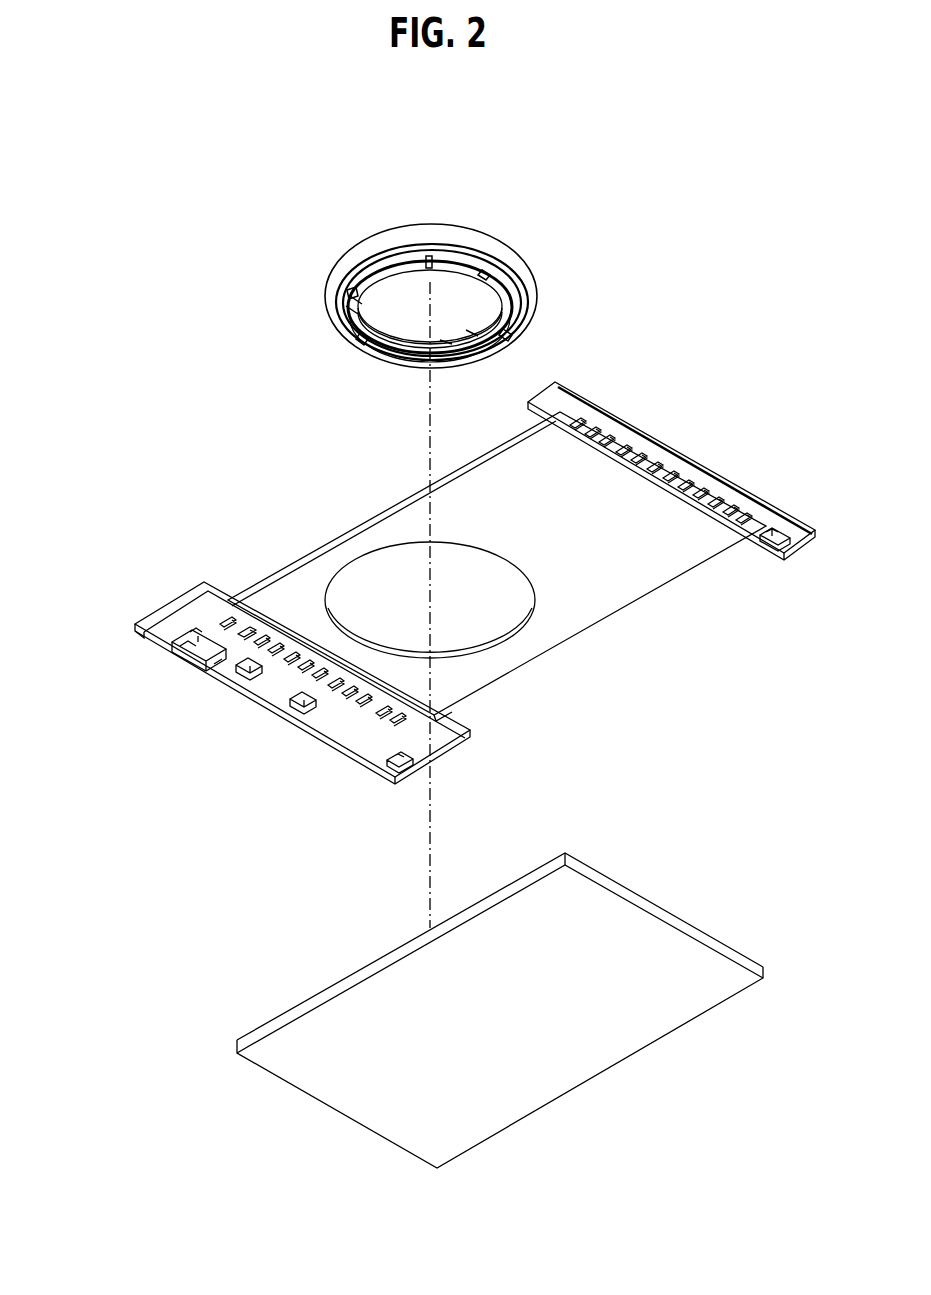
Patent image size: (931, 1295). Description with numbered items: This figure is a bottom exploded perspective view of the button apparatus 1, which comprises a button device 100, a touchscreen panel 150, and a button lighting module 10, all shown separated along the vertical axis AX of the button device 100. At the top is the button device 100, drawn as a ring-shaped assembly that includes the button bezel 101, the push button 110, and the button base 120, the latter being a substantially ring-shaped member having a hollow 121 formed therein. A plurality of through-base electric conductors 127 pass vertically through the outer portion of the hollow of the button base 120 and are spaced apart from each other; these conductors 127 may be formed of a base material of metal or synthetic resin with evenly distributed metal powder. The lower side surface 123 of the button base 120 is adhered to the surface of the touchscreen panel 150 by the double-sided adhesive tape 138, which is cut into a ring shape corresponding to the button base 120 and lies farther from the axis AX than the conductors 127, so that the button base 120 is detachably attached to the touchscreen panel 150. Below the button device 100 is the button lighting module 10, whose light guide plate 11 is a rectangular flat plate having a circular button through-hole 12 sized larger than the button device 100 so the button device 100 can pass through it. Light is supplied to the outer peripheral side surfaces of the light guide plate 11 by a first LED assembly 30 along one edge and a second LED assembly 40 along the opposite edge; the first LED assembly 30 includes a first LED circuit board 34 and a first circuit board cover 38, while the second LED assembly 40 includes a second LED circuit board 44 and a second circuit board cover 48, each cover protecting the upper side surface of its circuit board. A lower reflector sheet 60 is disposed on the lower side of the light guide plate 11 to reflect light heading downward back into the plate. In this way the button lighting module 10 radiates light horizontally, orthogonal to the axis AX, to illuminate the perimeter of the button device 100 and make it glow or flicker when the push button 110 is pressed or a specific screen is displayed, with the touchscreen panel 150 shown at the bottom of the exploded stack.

The button apparatus 1 is at (278, 190).
The button lighting module 10 is at (408, 566).
The light guide plate 11 is at (263, 577).
The button through-hole 12 is at (477, 615).
The first LED assembly 30 is at (281, 701).
The first LED circuit board 34 is at (338, 730).
The first circuit board cover 38 is at (135, 635).
The second LED assembly 40 is at (672, 454).
The second LED circuit board 44 is at (762, 525).
The second circuit board cover 48 is at (567, 385).
The lower reflector sheet 60 is at (655, 553).
The button device 100 is at (417, 290).
The button bezel 101 is at (463, 240).
The push button 110 is at (405, 283).
The button base 120 is at (330, 274).
The hollow 121 is at (447, 345).
The lower side surface 123 is at (470, 332).
The through-base electric conductors 127 is at (392, 250).
The double-sided adhesive tape 138 is at (352, 295).
The touchscreen panel 150 is at (700, 928).
The axis AX is at (436, 846).